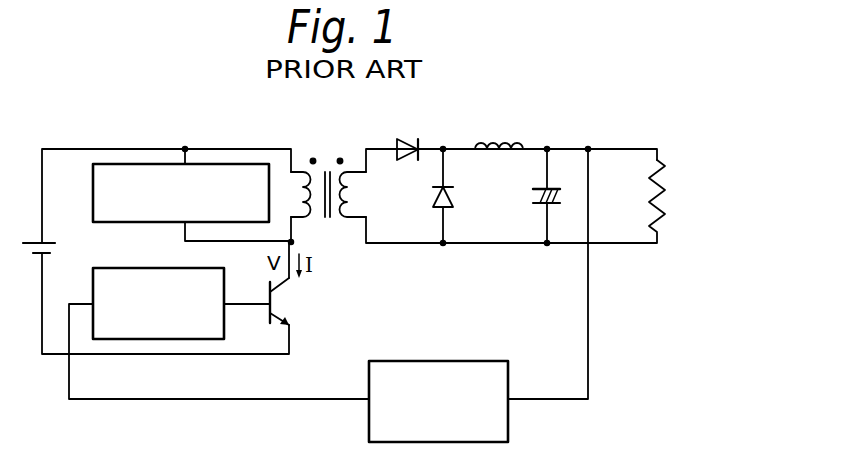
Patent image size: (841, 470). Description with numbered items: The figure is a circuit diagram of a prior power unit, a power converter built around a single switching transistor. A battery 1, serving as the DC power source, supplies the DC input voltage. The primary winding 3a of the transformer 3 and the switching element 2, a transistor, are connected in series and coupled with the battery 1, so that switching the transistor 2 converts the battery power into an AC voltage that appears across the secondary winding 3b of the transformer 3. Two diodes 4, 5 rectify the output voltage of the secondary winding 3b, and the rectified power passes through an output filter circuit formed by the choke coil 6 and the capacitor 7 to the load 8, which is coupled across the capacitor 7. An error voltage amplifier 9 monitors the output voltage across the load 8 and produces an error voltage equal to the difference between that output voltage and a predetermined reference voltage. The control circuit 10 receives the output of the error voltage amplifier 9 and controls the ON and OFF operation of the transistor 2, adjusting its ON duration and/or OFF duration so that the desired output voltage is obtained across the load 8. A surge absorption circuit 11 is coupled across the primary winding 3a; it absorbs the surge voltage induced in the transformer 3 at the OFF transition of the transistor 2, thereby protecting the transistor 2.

The battery 1 is at (54, 250).
The switching element 2 is at (283, 292).
The transformer 3 is at (328, 149).
The primary winding 3a is at (306, 196).
The secondary winding 3b is at (338, 197).
The diode 4 is at (405, 138).
The diode 5 is at (433, 202).
The choke coil 6 is at (505, 137).
The capacitor 7 is at (538, 200).
The load 8 is at (649, 187).
The error voltage amplifier 9 is at (461, 361).
The control circuit 10 is at (130, 268).
The surge absorption circuit 11 is at (93, 200).